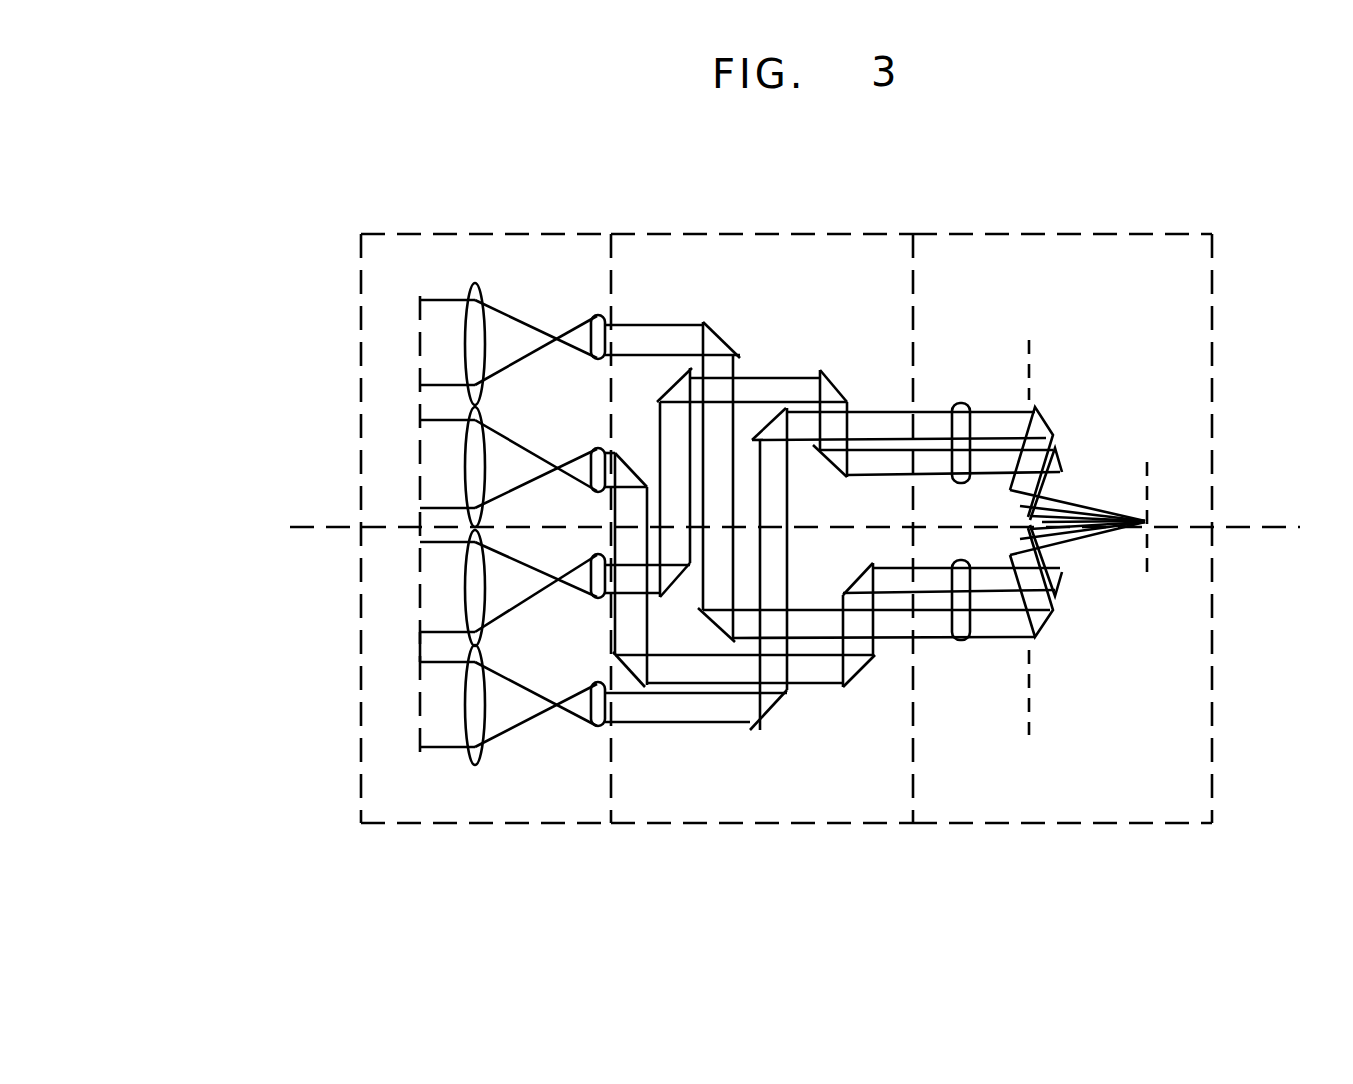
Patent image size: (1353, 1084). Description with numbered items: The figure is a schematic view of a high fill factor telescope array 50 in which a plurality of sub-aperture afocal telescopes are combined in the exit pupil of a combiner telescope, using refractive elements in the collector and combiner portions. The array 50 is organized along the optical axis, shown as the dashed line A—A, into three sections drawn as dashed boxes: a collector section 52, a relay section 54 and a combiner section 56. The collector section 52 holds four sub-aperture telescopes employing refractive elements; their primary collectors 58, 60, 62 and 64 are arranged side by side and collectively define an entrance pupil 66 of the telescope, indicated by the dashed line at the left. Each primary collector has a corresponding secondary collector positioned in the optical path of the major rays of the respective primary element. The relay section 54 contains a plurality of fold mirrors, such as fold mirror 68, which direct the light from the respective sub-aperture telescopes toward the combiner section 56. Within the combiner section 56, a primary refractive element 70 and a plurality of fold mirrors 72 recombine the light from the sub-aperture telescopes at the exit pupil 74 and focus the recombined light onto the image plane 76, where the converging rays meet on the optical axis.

The high fill factor telescope array 50 is at (175, 357).
The collector section 52 is at (359, 271).
The relay section 54 is at (740, 825).
The combiner section 56 is at (1133, 232).
The primary collector 58 is at (485, 324).
The primary collector 60 is at (485, 460).
The primary collector 62 is at (485, 578).
The primary collector 64 is at (510, 745).
The entrance pupil 66 is at (410, 700).
The fold mirror 68 is at (722, 334).
The primary refractive element 70 is at (975, 410).
The fold mirrors 72 is at (1047, 408).
The exit pupil 74 is at (1035, 692).
The image plane 76 is at (1150, 470).